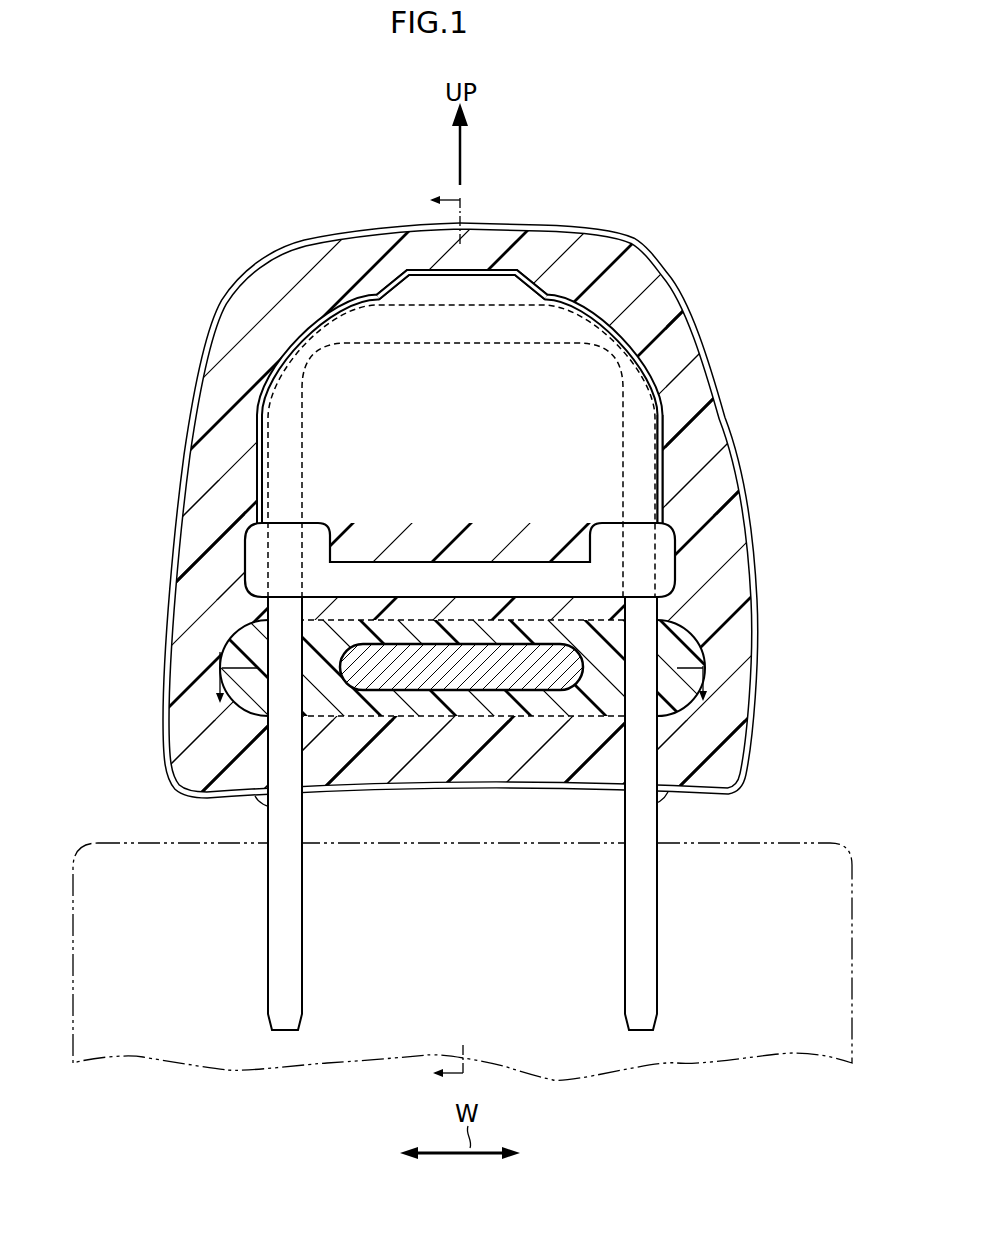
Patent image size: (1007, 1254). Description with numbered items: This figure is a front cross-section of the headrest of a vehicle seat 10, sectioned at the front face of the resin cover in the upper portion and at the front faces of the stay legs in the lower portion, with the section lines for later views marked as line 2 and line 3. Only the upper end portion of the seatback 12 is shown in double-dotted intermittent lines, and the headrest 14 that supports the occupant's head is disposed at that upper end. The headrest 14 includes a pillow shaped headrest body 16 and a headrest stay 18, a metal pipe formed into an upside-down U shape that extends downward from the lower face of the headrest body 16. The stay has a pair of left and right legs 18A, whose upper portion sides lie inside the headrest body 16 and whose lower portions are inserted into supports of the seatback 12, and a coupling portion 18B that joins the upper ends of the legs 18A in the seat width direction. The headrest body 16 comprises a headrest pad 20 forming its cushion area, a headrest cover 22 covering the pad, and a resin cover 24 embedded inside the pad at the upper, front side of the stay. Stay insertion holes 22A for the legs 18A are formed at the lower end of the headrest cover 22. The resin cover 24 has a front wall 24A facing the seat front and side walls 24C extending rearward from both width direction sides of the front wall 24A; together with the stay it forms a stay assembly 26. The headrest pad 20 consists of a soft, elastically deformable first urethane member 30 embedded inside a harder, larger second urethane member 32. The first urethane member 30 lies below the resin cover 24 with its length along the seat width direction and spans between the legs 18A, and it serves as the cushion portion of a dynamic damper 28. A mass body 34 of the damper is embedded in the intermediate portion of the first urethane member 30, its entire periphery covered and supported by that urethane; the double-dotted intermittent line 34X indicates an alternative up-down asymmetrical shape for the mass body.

The vehicle seat 10 is at (767, 213).
The seatback 12 is at (792, 826).
The headrest 14 is at (707, 250).
The headrest body 16 is at (170, 381).
The headrest stay 18 is at (225, 833).
The legs 18A is at (303, 822).
The coupling portion 18B is at (461, 328).
The headrest pad 20 is at (188, 500).
The headrest cover 22 is at (211, 342).
The stay insertion holes 22A is at (266, 803).
The resin cover 24 is at (305, 355).
The front wall 24A is at (645, 360).
The side walls 24C is at (663, 457).
The stay assembly 26 is at (690, 501).
The dynamic damper 28 is at (476, 732).
The first urethane member 30 is at (431, 616).
The second urethane member 32 is at (196, 553).
The mass body 34 is at (487, 639).
The double-dotted intermittent line 34X is at (545, 652).
The line 2- 2 is at (436, 640).
The line 3- 3 is at (218, 670).